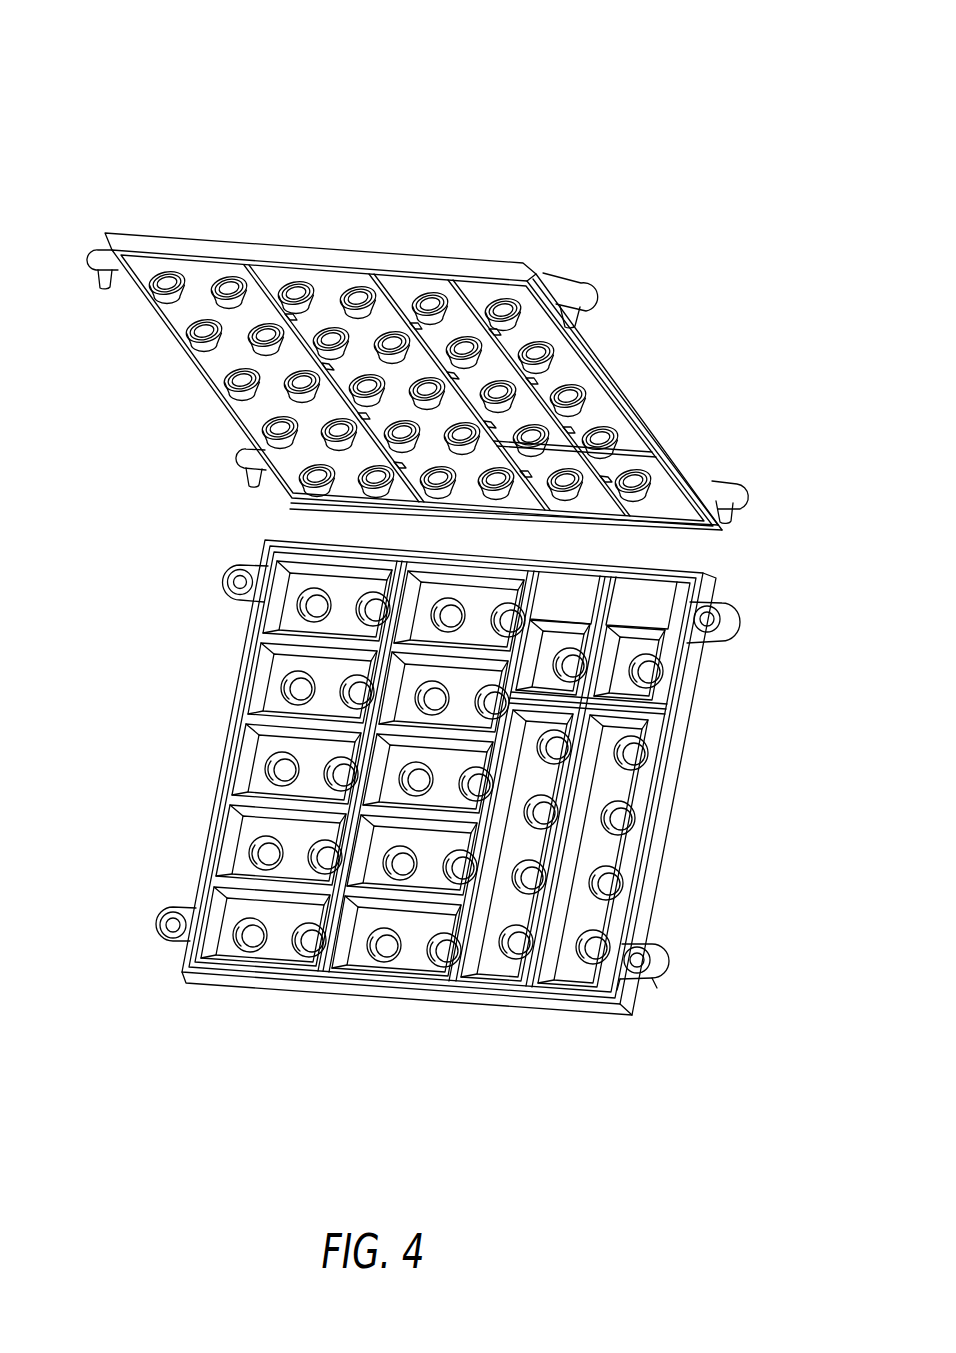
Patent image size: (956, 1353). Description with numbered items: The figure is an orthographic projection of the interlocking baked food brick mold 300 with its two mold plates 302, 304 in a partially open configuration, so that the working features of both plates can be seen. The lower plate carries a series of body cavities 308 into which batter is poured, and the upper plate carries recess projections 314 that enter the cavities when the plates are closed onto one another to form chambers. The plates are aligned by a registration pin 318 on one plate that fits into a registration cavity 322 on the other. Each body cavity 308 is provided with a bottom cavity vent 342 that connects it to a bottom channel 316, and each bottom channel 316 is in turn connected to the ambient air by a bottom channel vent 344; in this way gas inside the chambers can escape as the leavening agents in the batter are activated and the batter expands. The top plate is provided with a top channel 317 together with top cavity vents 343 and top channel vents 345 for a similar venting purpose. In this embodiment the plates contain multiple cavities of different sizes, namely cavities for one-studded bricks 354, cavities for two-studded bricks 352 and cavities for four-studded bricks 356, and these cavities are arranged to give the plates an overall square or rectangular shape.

The interlocking baked food brick mold 300 is at (360, 176).
The mold plate 302 is at (412, 356).
The mold plate 304 is at (448, 819).
The body cavity 308 is at (263, 987).
The recess projection 314 is at (458, 283).
The bottom channel 316 is at (277, 952).
The top channel 317 is at (250, 260).
The registration pin 318 is at (248, 486).
The registration cavity 322 is at (250, 580).
The bottom cavity vent 342 is at (164, 916).
The top cavity vent 343 is at (147, 283).
The bottom channel vent 344 is at (228, 584).
The top channel vent 345 is at (430, 508).
The cavity for two-studded bricks 352 is at (410, 958).
The cavity for one-studded bricks 354 is at (650, 667).
The cavity for four-studded bricks 356 is at (588, 984).